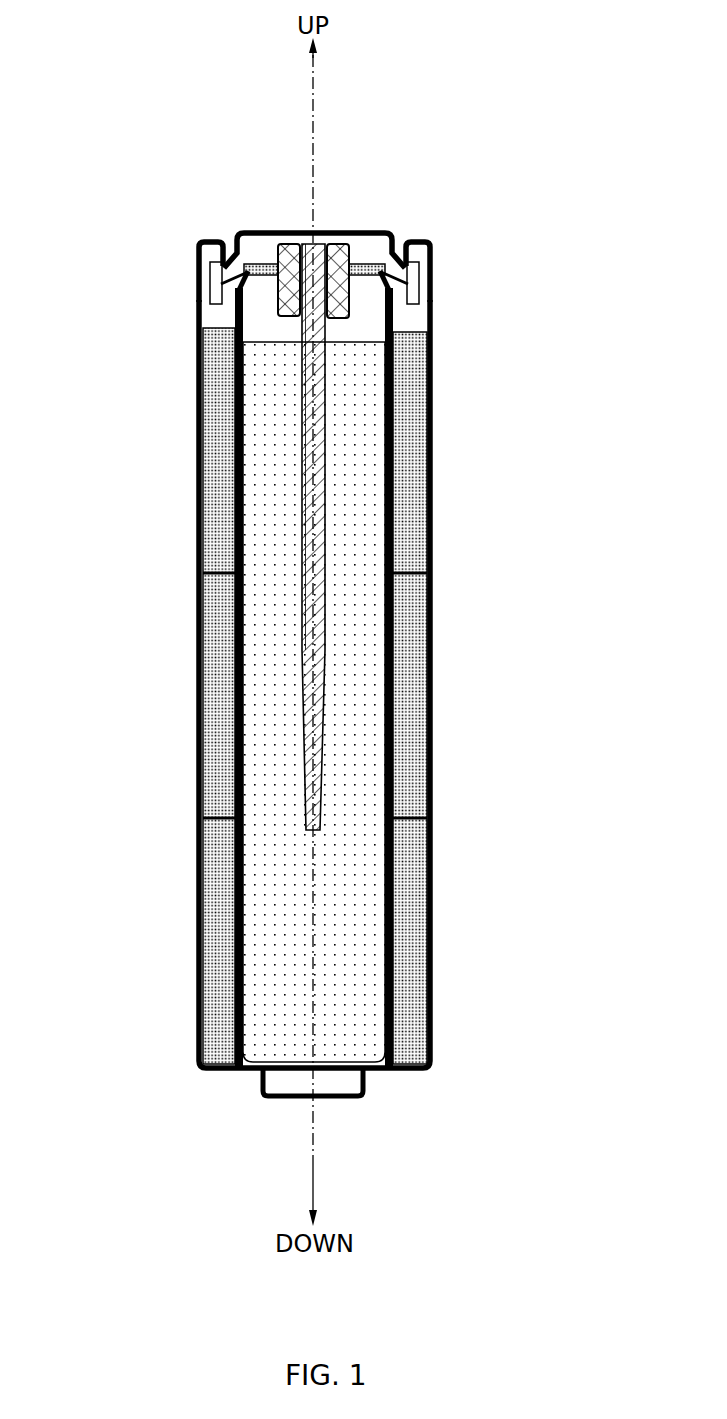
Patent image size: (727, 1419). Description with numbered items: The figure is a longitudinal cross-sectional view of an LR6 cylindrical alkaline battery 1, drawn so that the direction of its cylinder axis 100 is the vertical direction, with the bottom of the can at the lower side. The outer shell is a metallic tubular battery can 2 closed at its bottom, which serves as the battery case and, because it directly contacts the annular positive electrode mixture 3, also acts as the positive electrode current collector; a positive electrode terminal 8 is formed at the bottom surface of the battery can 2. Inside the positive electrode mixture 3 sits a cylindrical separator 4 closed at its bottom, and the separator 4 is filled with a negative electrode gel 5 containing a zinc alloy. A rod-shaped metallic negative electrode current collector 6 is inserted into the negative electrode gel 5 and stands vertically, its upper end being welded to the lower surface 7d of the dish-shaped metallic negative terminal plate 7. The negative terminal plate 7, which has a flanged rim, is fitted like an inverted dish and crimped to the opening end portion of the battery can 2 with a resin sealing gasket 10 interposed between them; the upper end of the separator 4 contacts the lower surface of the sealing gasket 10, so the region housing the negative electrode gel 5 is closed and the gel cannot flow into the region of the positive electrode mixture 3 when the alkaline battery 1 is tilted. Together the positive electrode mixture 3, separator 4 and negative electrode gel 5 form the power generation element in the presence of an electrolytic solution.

The alkaline battery 1 is at (430, 146).
The cylinder axis 100 is at (310, 128).
The battery can 2 is at (205, 243).
The positive electrode mixture 3 is at (216, 421).
The separator 4 is at (236, 328).
The negative electrode gel 5 is at (328, 1015).
The negative electrode current collector 6 is at (325, 500).
The negative terminal plate 7 is at (366, 231).
The lower surface 7d is at (202, 270).
The positive electrode terminal 8 is at (294, 1100).
The sealing gasket 10 is at (341, 236).